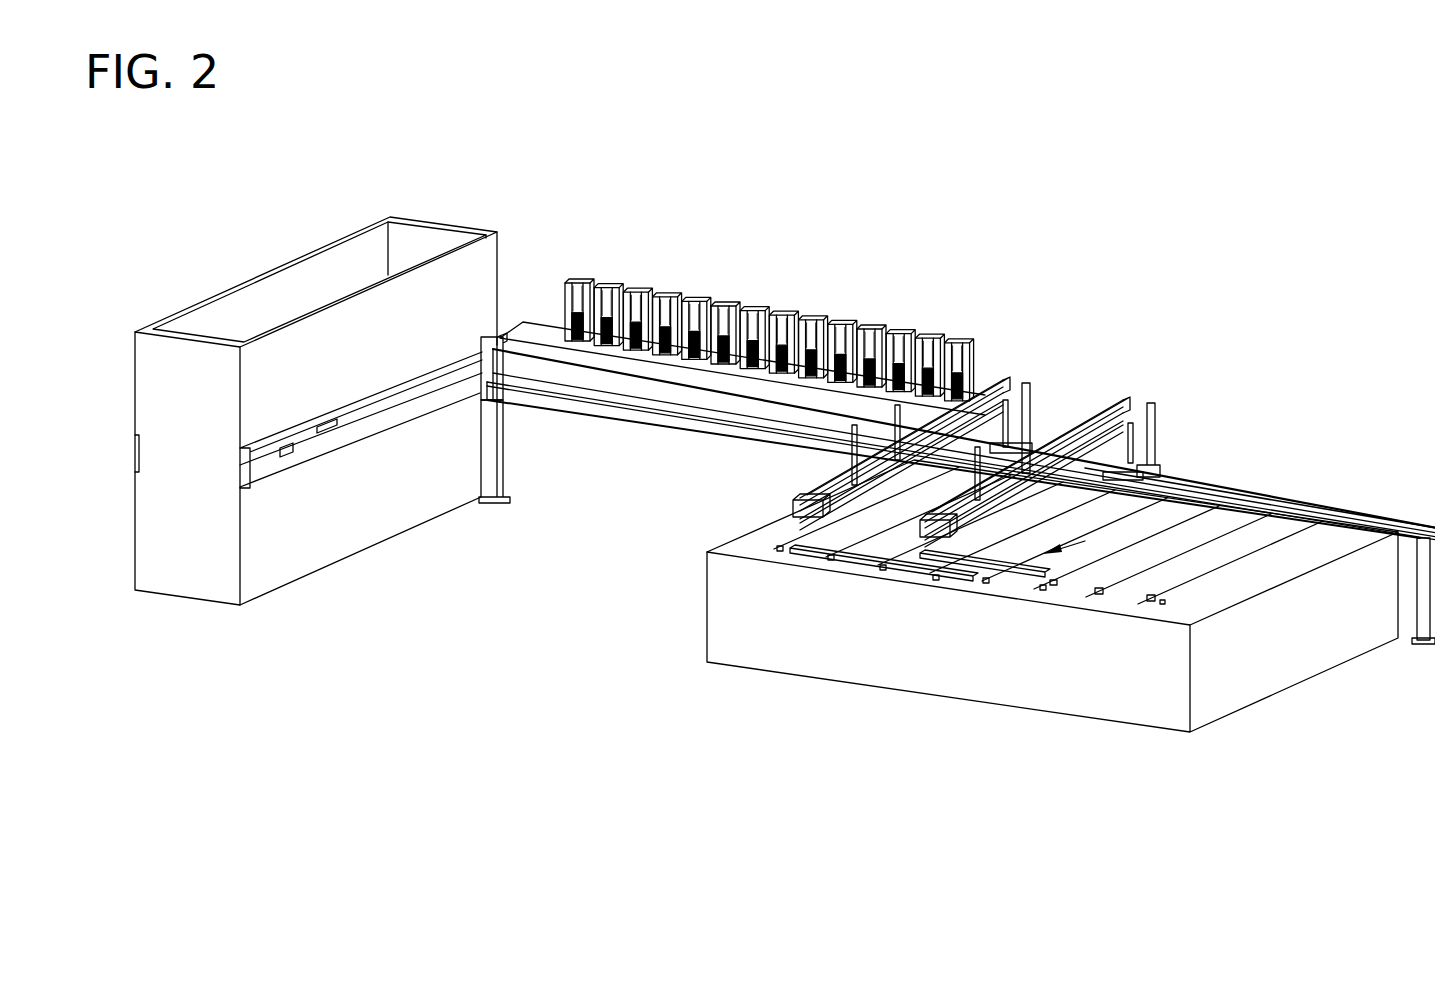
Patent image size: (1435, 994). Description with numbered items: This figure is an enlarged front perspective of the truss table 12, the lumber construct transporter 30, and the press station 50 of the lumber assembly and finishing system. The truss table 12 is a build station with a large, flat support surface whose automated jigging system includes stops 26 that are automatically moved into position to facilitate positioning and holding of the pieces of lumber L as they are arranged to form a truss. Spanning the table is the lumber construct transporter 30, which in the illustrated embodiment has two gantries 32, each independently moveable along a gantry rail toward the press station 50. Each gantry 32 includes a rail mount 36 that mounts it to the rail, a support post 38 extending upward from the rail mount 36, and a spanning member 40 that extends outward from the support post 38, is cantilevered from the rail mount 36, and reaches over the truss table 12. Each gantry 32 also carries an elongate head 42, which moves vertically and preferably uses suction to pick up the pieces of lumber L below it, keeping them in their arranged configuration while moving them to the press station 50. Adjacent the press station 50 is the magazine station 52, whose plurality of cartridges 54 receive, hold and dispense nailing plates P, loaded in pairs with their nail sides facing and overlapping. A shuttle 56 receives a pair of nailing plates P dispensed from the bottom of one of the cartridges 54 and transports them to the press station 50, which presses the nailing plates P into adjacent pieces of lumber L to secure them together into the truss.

The truss table 12 is at (1052, 642).
The stops 26 is at (1160, 606).
The lumber construct transporter 30 is at (1044, 425).
The gantry 32 is at (1015, 386).
The rail mount 36 is at (1160, 478).
The support post 38 is at (1075, 425).
The spanning member 40 is at (805, 497).
The head 42 is at (790, 545).
The press station 50 is at (183, 608).
The magazine station 52 is at (749, 288).
The cartridges 54 is at (610, 286).
The shuttle 56 is at (588, 366).
The nailing plates P is at (557, 318).
The lumber L is at (1082, 538).